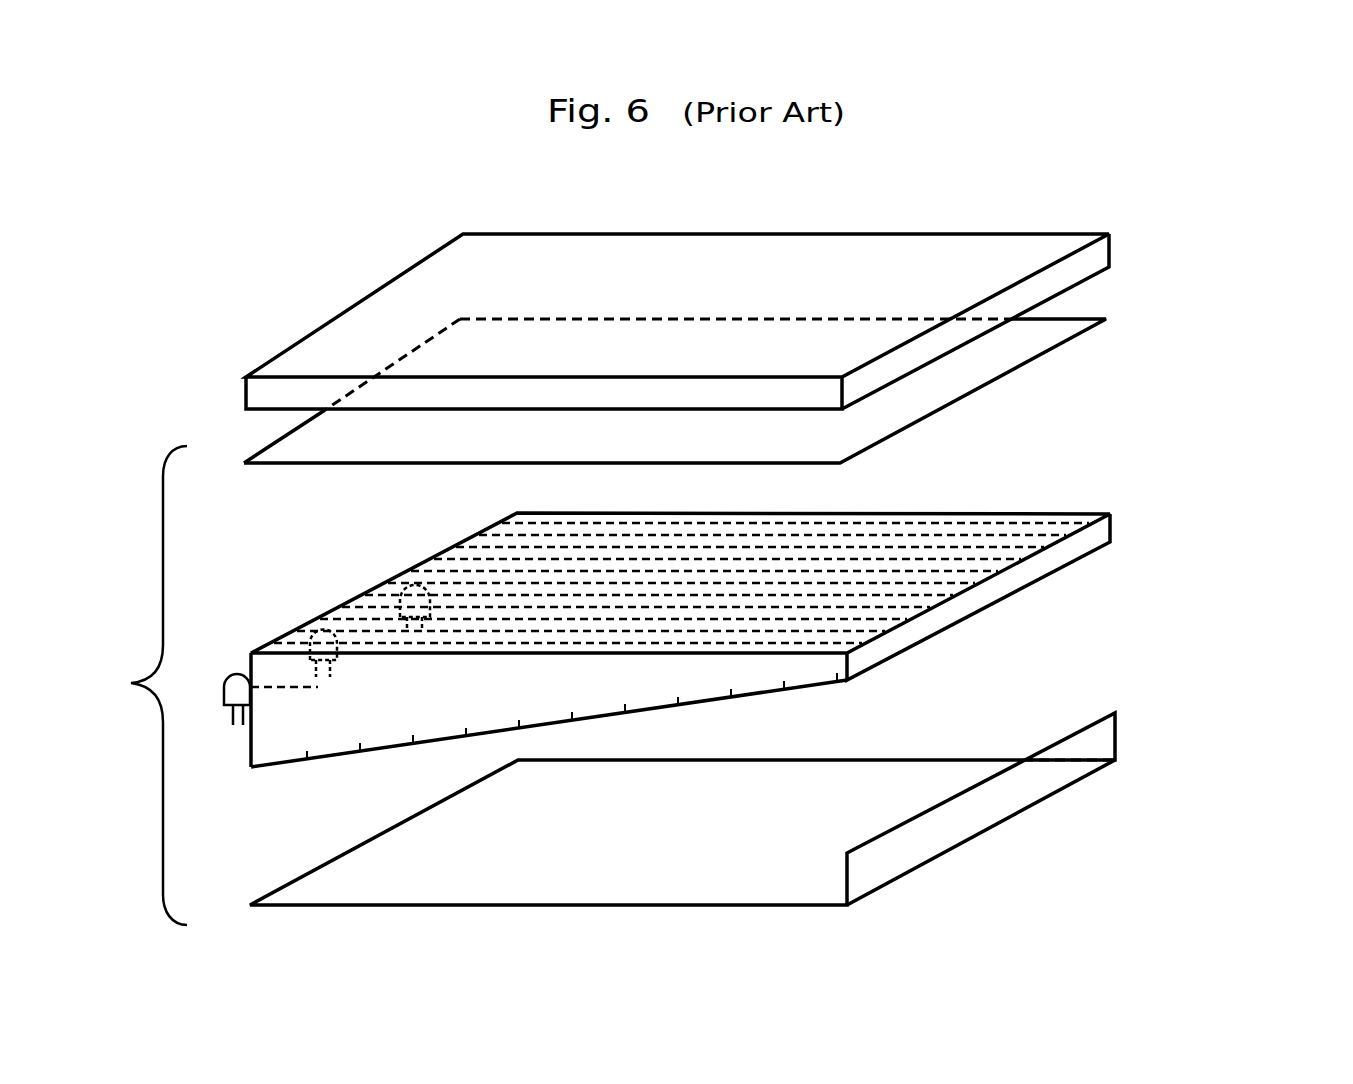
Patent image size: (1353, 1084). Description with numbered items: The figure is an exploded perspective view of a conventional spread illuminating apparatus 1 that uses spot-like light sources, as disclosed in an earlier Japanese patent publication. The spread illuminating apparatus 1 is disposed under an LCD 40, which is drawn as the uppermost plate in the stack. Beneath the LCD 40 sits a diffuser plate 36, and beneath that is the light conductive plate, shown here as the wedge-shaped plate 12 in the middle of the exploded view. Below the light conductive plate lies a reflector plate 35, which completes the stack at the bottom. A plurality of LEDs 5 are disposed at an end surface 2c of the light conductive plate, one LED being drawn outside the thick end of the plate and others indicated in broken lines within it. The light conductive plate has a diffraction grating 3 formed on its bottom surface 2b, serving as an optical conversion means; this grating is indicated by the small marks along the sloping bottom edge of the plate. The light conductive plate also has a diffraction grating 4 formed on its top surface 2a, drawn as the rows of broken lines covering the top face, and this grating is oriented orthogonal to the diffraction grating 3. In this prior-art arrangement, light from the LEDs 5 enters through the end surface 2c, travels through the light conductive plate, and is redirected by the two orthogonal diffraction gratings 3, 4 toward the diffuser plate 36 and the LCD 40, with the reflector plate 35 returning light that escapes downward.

The spread illuminating apparatus 1 is at (131, 683).
The top surface 2a is at (940, 533).
The bottom surface 2b is at (715, 702).
The end surface 2c is at (250, 748).
The diffraction grating 3 is at (380, 749).
The diffraction grating 4 is at (877, 593).
The LEDs 5 is at (238, 682).
The light guide plate 12 is at (1117, 523).
The reflector plate 35 is at (870, 787).
The diffuser plate 36 is at (1038, 333).
The LCD 40 is at (1093, 260).